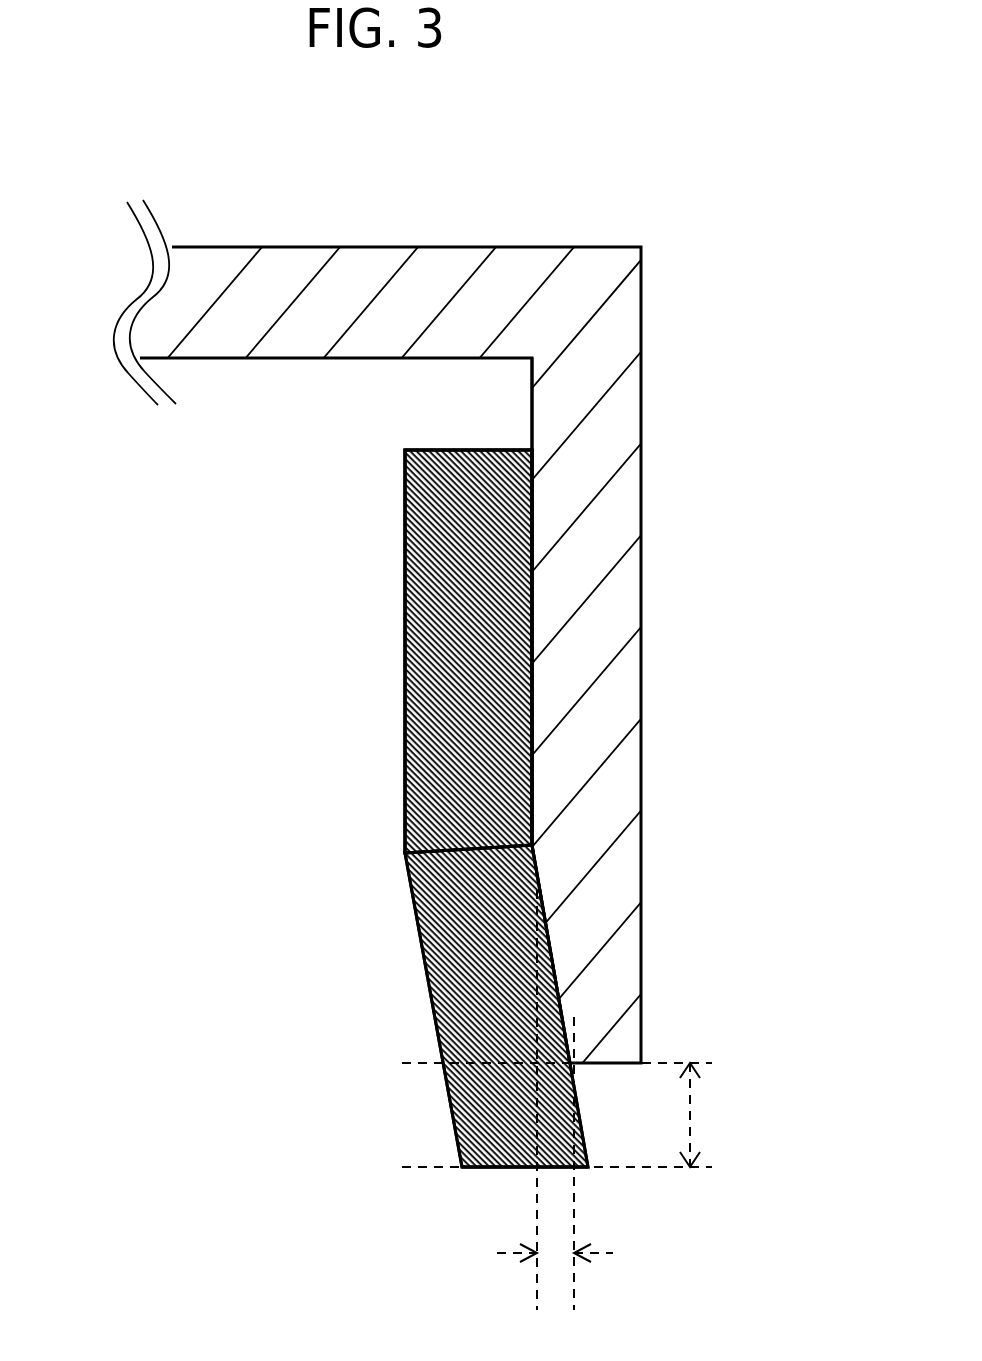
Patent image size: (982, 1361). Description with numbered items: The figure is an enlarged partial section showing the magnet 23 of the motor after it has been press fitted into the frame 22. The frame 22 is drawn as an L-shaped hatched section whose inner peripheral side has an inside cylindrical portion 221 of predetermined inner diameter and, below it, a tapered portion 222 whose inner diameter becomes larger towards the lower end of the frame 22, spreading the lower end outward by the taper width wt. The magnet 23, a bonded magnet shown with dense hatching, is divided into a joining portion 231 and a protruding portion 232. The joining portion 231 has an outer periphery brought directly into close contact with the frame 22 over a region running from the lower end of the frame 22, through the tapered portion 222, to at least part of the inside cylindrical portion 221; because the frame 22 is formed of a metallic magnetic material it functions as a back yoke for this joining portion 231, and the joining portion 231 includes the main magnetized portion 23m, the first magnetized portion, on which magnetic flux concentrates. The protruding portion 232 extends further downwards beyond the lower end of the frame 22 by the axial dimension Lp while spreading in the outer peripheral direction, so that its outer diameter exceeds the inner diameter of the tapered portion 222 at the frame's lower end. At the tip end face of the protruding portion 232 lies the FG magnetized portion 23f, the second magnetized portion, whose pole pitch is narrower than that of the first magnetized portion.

The frame 22 is at (491, 612).
The inside cylindrical portion 221 is at (532, 608).
The tapered portion 222 is at (558, 968).
The magnet 23 is at (455, 827).
The joining portion 231 is at (460, 892).
The protruding portion 232 is at (490, 1112).
The main magnetized portion 23m is at (420, 597).
The FG magnetized portion 23f is at (577, 1172).
The axial dimension Lp is at (572, 1115).
The taper width wt is at (581, 1100).